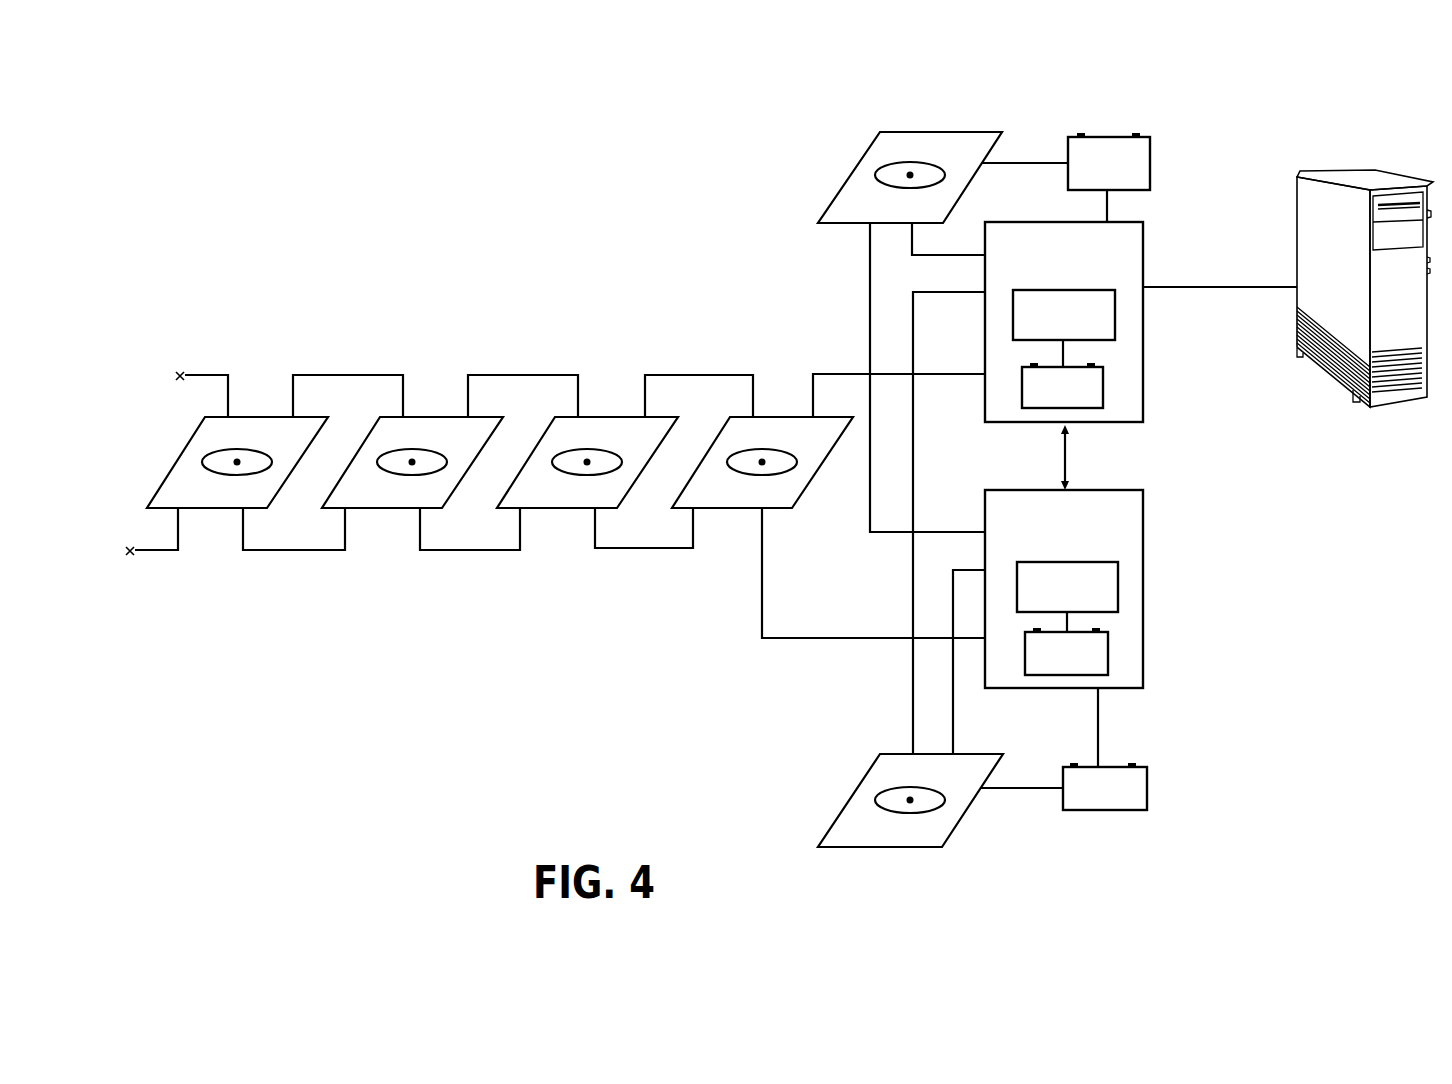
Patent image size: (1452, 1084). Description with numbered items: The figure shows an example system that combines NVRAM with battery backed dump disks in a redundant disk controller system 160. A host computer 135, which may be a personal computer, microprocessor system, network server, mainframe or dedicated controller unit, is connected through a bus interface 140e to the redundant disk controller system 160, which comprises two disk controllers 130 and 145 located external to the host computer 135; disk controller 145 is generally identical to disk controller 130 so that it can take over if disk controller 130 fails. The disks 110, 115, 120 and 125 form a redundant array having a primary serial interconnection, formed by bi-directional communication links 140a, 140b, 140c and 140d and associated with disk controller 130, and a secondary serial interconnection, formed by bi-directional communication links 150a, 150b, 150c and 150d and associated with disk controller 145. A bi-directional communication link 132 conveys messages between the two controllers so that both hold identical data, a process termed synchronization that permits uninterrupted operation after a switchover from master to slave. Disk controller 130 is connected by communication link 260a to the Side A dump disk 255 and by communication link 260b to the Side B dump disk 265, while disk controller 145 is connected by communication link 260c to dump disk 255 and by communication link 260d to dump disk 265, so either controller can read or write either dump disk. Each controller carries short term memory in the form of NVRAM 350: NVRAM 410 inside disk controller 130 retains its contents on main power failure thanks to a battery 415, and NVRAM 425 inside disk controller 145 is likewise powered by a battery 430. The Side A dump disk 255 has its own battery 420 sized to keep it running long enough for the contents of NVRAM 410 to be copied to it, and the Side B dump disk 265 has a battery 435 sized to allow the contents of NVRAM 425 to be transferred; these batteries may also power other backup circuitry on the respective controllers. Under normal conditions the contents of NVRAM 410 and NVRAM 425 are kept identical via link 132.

The disk 110 is at (306, 442).
The disk 115 is at (481, 442).
The disk 120 is at (656, 442).
The disk 125 is at (831, 442).
The disk controller 130 is at (1140, 250).
The bi-directional communication link 132 is at (1070, 462).
The host computer 135 is at (1400, 172).
The bi-directional communication link 140a is at (363, 374).
The bi-directional communication link 140b is at (527, 373).
The bi-directional communication link 140c is at (695, 373).
The bi-directional communication link 140d is at (823, 373).
The bus interface 140e is at (1247, 285).
The disk controller 145 is at (1138, 523).
The bi-directional communication link 150a is at (278, 552).
The bi-directional communication link 150b is at (458, 552).
The bi-directional communication link 150c is at (628, 550).
The bi-directional communication link 150d is at (800, 637).
The redundant disk controller system 160 is at (1115, 430).
The Side A dump disk 255 is at (981, 154).
The communication link 260a is at (952, 250).
The communication link 260b is at (952, 288).
The communication link 260c is at (943, 523).
The communication link 260d is at (957, 700).
The Side B dump disk 265 is at (972, 784).
The NVRAM 350 is at (1118, 431).
The NVRAM 410 is at (1115, 312).
The battery 415 is at (1103, 382).
The battery 420 is at (1157, 152).
The NVRAM 425 is at (1120, 603).
The battery 430 is at (1110, 650).
The battery 435 is at (1152, 778).